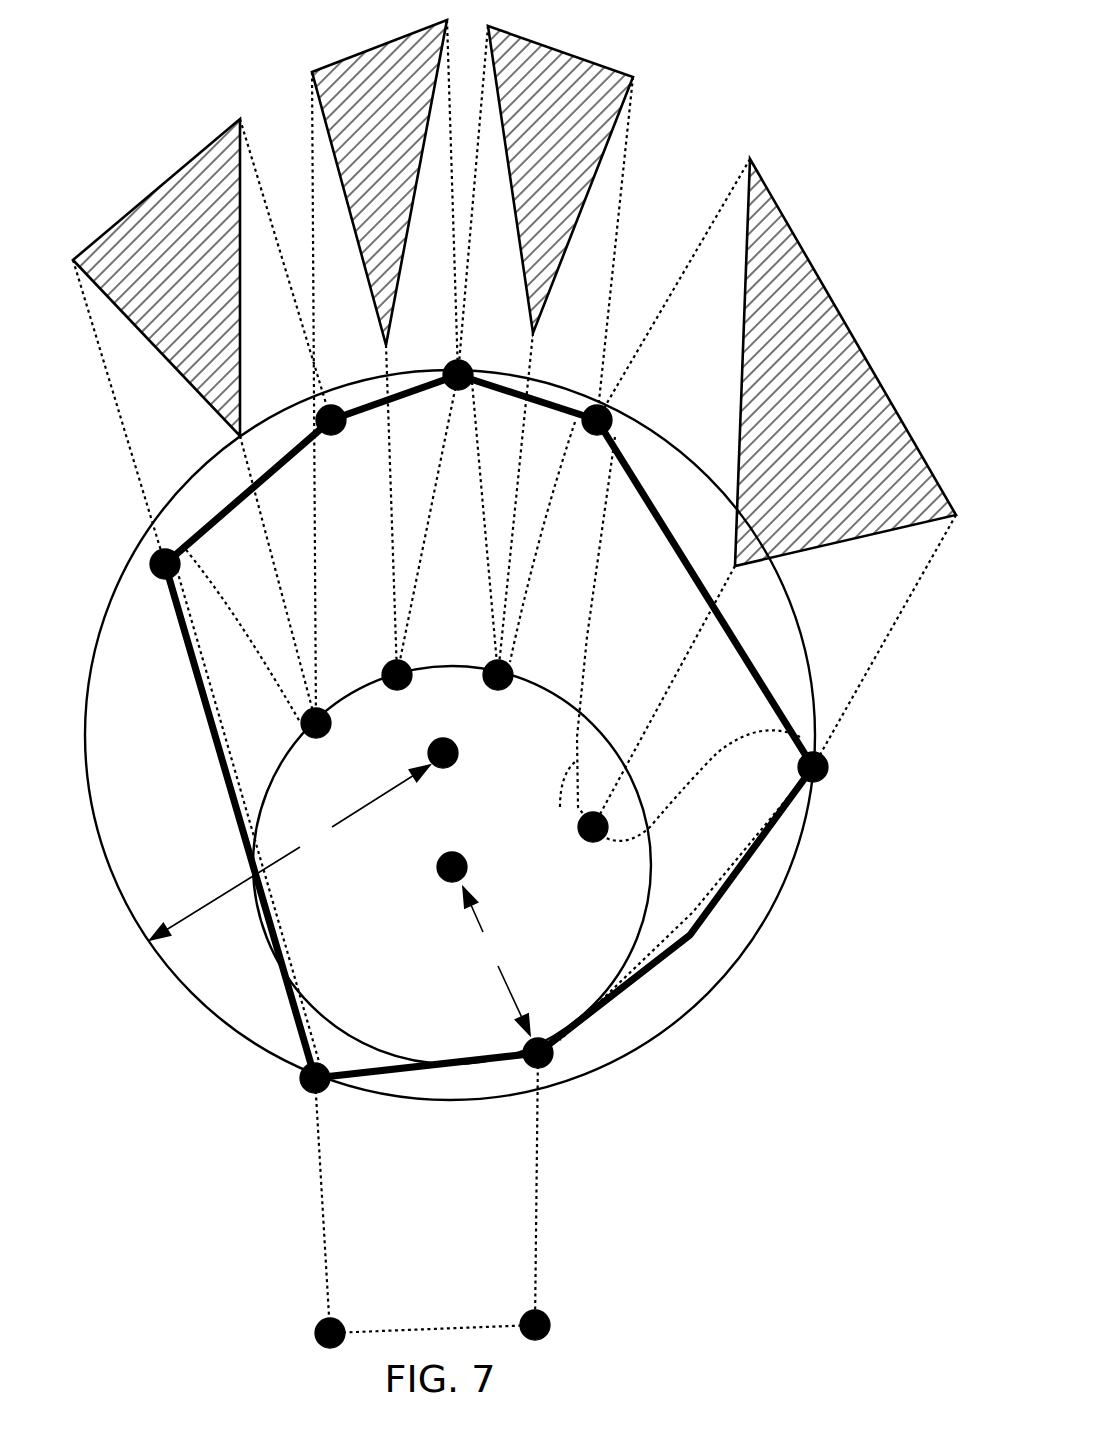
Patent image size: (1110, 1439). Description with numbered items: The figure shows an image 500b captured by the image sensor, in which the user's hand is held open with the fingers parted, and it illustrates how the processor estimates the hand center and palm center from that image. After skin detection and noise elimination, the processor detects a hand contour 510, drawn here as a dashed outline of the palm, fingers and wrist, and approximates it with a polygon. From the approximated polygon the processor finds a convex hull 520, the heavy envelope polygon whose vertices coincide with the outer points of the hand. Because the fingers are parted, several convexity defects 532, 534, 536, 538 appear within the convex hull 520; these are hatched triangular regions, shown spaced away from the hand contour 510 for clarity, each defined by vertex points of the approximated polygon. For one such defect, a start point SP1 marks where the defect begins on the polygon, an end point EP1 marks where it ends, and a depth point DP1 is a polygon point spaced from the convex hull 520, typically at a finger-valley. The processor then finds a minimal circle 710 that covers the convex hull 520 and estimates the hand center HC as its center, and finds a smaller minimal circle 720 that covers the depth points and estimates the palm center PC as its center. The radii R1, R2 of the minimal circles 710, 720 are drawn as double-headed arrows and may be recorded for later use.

The image 500b is at (900, 60).
The hand contour 510 is at (560, 815).
The convex hull 520 is at (767, 688).
The convexity defect 532 is at (821, 272).
The convexity defect 534 is at (597, 178).
The convexity defect 536 is at (345, 58).
The convexity defect 538 is at (193, 156).
The minimal circle 710 is at (693, 1005).
The minimal circle 720 is at (647, 903).
The end point EP1 is at (612, 408).
The start point SP1 is at (825, 765).
The depth point DP1 is at (607, 820).
The hand center HC is at (432, 745).
The palm center PC is at (440, 868).
The radius R1 is at (290, 852).
The radius R2 is at (496, 961).